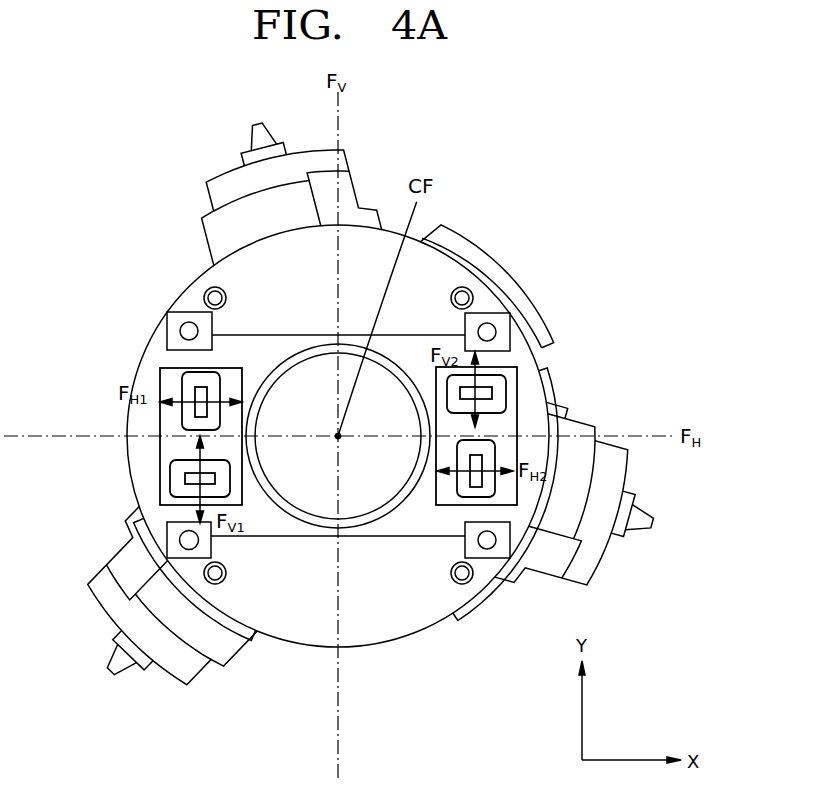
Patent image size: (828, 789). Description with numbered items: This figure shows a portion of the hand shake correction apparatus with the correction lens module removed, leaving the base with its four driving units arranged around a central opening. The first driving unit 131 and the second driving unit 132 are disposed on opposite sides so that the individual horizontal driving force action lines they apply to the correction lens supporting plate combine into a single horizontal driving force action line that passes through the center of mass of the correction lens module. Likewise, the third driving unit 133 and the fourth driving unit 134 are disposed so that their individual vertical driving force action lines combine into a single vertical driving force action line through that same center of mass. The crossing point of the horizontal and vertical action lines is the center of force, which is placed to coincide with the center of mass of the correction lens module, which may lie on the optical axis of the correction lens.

The first driving unit 131 is at (188, 380).
The second driving unit 132 is at (486, 493).
The third driving unit 133 is at (178, 478).
The fourth driving unit 134 is at (497, 392).